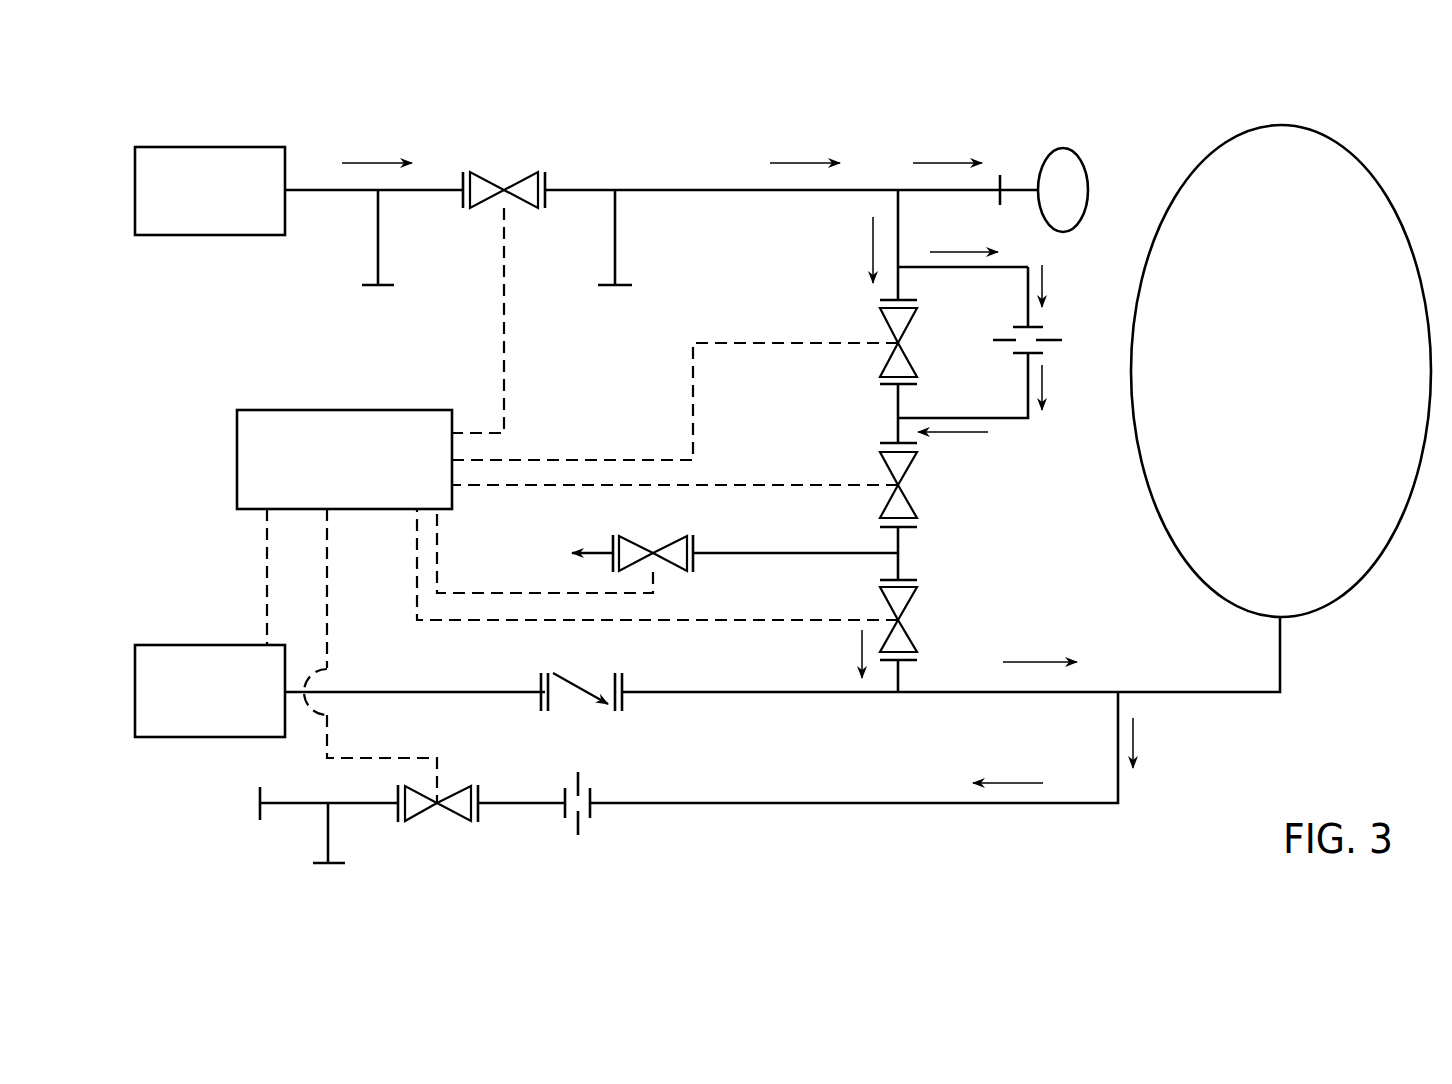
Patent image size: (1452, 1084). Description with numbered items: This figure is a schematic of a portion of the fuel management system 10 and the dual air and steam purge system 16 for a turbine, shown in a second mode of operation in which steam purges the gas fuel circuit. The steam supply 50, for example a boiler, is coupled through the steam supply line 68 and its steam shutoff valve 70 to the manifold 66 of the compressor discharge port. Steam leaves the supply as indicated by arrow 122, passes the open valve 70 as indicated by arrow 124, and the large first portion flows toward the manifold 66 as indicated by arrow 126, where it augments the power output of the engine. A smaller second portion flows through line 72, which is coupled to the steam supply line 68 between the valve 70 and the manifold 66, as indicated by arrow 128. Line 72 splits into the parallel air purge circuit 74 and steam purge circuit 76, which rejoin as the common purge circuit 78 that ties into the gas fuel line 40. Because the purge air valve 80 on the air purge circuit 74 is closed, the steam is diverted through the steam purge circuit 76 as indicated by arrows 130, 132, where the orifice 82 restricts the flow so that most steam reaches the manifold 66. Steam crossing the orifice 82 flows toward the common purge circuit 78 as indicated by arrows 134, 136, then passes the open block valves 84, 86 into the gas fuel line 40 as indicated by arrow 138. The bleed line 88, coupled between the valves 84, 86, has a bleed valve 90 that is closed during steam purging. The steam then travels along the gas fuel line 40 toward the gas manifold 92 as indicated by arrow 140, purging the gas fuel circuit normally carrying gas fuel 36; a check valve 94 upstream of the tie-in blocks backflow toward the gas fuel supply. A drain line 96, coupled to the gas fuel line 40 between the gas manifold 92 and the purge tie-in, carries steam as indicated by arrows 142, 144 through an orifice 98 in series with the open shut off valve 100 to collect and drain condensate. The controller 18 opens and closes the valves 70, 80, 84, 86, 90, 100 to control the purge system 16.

The fuel management system 10 is at (170, 618).
The dual air and steam purge system 16 is at (798, 273).
The controller 18 is at (344, 410).
The gas fuel 36 is at (232, 645).
The gas fuel line 40 is at (757, 692).
The steam supply 50 is at (212, 147).
The manifold 66 is at (1068, 148).
The steam supply line 68 is at (640, 190).
The valve 70 is at (504, 186).
The line 72 is at (900, 202).
The air purge circuit 74 is at (905, 299).
The steam purge circuit 76 is at (1022, 298).
The common purge circuit 78 is at (900, 563).
The valve 80 is at (900, 345).
The orifice 82 is at (1045, 338).
The valve 84 is at (905, 482).
The valve 86 is at (905, 618).
The line 88 is at (760, 553).
The valve 90 is at (655, 550).
The gas manifold 92 is at (1182, 190).
The valve 94 is at (575, 695).
The drain line 96 is at (790, 803).
The orifice 98 is at (578, 825).
The valve 100 is at (437, 810).
The arrow 122 is at (372, 160).
The arrow 124 is at (800, 160).
The arrow 126 is at (940, 160).
The arrow 128 is at (870, 250).
The arrow 130 is at (962, 250).
The arrow 132 is at (1047, 284).
The arrow 134 is at (1046, 383).
The arrow 136 is at (960, 433).
The arrow 138 is at (858, 658).
The arrow 140 is at (1033, 660).
The arrow 142 is at (1140, 742).
The arrow 144 is at (1015, 782).